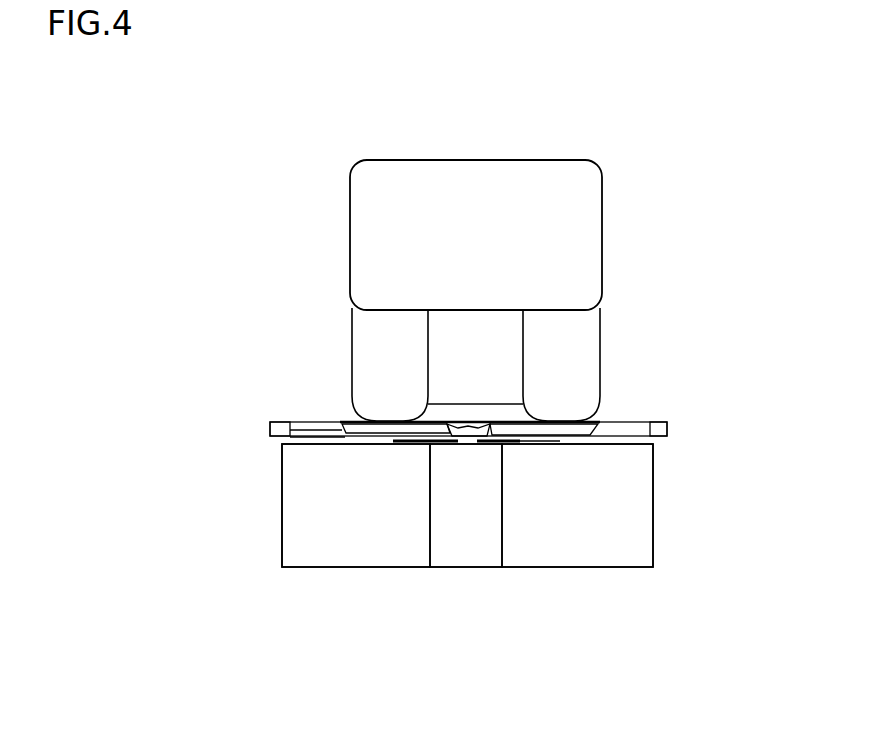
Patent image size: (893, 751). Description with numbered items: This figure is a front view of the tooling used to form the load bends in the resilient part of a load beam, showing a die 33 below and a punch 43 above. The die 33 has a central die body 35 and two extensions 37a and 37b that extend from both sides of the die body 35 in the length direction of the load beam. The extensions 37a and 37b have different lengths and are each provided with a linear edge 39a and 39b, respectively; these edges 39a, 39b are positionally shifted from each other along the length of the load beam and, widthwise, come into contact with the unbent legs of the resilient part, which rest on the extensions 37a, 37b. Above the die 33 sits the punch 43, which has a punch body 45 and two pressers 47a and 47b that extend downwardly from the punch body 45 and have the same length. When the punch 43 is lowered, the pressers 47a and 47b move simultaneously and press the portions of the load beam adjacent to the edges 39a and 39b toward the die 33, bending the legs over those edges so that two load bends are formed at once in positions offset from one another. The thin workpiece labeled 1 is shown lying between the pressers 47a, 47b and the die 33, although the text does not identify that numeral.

The punch 43 is at (476, 254).
The punch body 45 is at (594, 232).
The presser 47a is at (583, 333).
The presser 47b is at (369, 327).
The fuse device 1 is at (503, 390).
The linear edge 39a is at (630, 443).
The linear edge 39b is at (313, 440).
The die 33 is at (520, 547).
The die body 35 is at (467, 555).
The extension 37a is at (587, 553).
The extension 37b is at (370, 560).